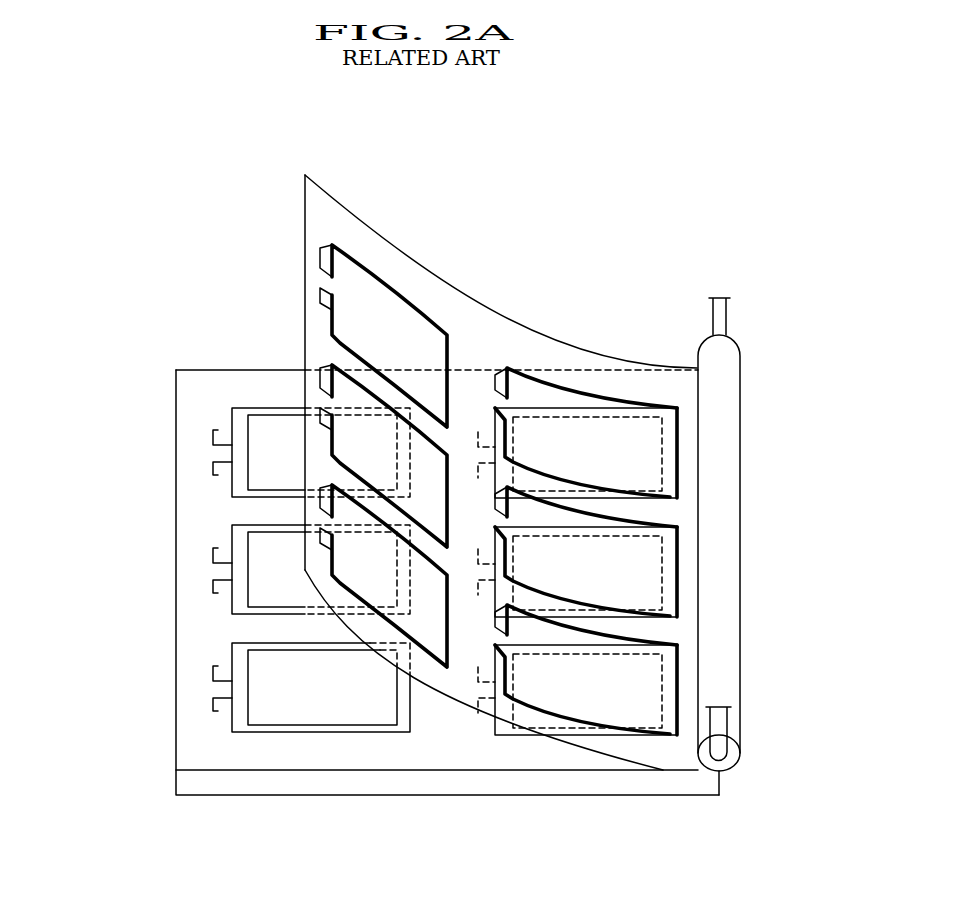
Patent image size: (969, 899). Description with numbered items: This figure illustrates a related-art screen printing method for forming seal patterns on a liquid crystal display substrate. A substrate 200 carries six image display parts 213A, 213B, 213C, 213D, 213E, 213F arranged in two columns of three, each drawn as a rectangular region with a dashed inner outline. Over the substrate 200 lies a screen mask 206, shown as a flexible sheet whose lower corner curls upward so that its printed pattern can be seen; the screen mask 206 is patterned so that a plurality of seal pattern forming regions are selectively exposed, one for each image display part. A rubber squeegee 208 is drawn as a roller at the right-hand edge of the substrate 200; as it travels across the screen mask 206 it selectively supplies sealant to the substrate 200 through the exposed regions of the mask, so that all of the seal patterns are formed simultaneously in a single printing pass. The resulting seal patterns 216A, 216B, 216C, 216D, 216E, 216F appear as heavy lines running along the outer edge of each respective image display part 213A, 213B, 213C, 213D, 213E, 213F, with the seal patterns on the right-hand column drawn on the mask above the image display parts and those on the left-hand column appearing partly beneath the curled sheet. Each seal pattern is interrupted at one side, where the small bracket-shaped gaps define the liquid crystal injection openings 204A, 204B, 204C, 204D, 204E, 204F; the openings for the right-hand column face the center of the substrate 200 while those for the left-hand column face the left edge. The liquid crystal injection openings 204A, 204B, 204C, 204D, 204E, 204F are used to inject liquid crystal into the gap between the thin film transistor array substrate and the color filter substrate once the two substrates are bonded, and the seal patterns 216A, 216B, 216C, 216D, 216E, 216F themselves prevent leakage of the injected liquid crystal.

The substrate 200 is at (702, 788).
The screen mask 206 is at (344, 212).
The rubber squeegee 208 is at (728, 362).
The liquid crystal injection opening 204A is at (472, 450).
The liquid crystal injection opening 204B is at (472, 574).
The liquid crystal injection opening 204C is at (471, 690).
The liquid crystal injection opening 204D is at (204, 450).
The liquid crystal injection opening 204E is at (204, 568).
The liquid crystal injection opening 204F is at (204, 687).
The image display part 213A is at (628, 463).
The image display part 213B is at (628, 582).
The image display part 213C is at (628, 700).
The image display part 213D is at (298, 463).
The image display part 213E is at (298, 581).
The image display part 213F is at (298, 699).
The seal pattern 216A is at (570, 407).
The seal pattern 216B is at (570, 526).
The seal pattern 216C is at (572, 644).
The seal pattern 216D is at (232, 423).
The seal pattern 216E is at (232, 541).
The seal pattern 216F is at (232, 659).